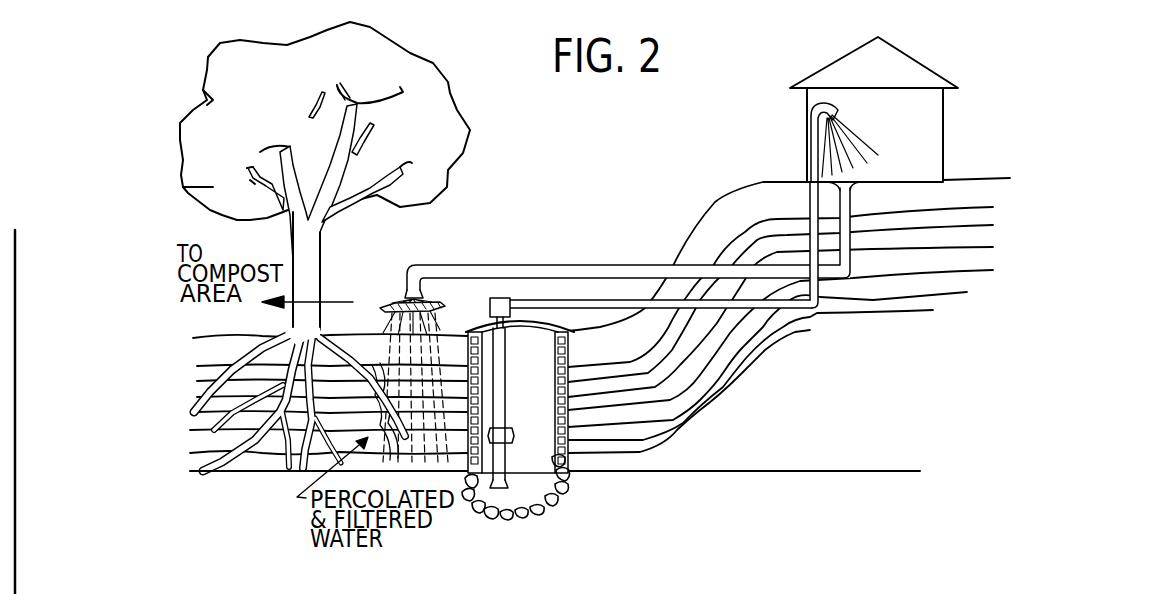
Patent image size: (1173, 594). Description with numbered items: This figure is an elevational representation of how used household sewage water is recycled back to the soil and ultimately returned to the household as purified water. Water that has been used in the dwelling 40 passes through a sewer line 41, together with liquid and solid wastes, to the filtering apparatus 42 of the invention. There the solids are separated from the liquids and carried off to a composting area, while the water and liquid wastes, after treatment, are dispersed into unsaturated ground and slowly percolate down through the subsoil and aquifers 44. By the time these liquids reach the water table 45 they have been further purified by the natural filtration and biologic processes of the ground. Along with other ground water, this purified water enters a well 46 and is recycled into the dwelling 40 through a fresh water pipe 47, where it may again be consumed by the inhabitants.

The dwelling 40 is at (822, 70).
The sewer line 41 is at (852, 194).
The filtering apparatus 42 is at (392, 302).
The subsoil and aquifers 44 is at (273, 450).
The water table 45 is at (737, 471).
The well 46 is at (541, 368).
The fresh water pipe 47 is at (571, 299).